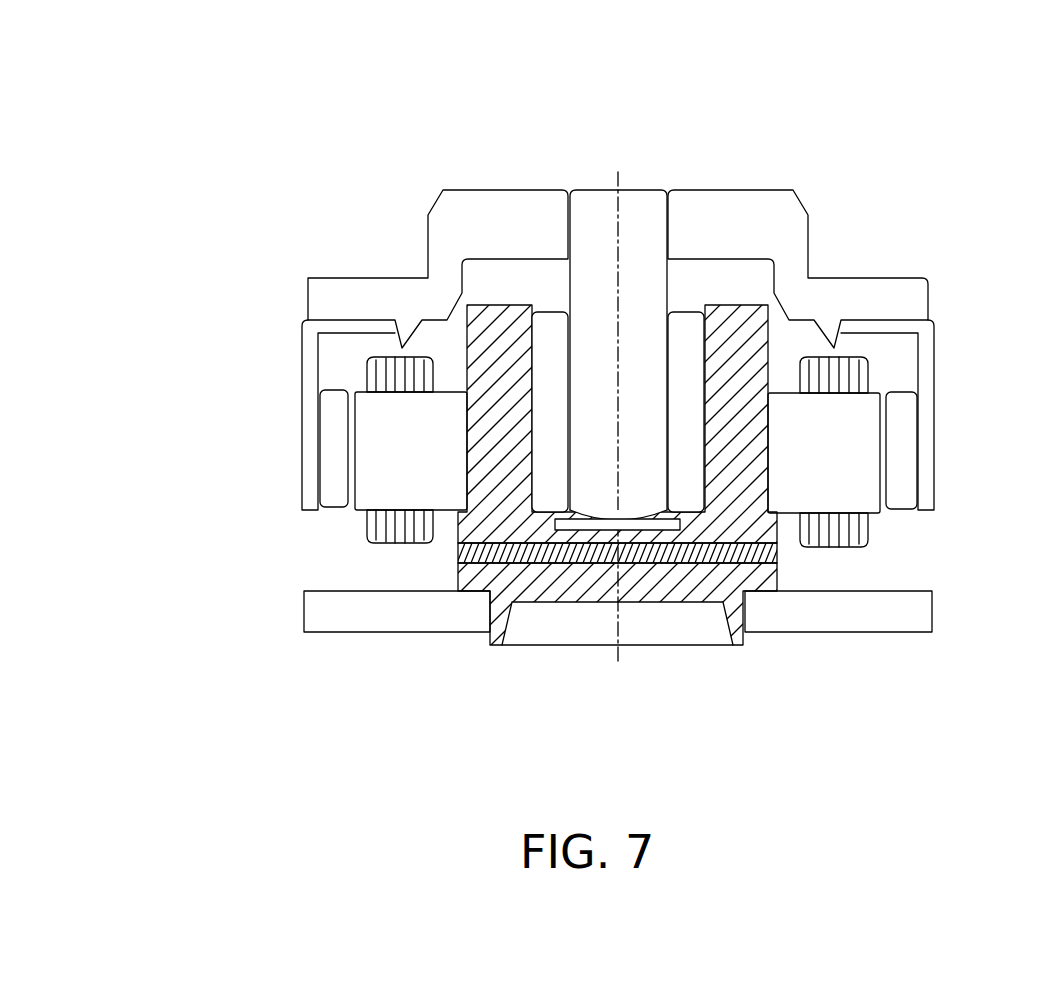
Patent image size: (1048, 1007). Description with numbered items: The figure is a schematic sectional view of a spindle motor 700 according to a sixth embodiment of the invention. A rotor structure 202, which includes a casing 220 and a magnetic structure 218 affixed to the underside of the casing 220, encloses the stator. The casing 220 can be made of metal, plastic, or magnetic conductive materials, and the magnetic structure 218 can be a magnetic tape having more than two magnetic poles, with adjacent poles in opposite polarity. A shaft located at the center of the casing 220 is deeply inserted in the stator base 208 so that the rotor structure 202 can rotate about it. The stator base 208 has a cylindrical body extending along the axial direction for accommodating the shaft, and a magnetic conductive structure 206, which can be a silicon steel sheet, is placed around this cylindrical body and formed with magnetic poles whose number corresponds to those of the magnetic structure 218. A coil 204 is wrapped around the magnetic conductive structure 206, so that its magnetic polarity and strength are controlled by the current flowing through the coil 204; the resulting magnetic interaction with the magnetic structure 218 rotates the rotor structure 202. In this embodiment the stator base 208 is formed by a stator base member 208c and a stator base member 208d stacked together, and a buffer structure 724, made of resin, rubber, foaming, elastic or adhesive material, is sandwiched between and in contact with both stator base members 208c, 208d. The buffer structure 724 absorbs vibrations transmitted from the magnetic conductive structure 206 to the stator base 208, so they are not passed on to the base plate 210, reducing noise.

The spindle motor 700 is at (198, 55).
The rotor structure 202 is at (405, 158).
The coil 204 is at (425, 367).
The magnetic conductive structure 206 is at (387, 427).
The stator base 208 is at (150, 530).
The stator base member 208c is at (488, 460).
The stator base member 208d is at (483, 577).
The base plate 210 is at (450, 612).
The magnetic structure 218 is at (330, 413).
The casing 220 is at (377, 303).
The buffer structure 724 is at (745, 549).